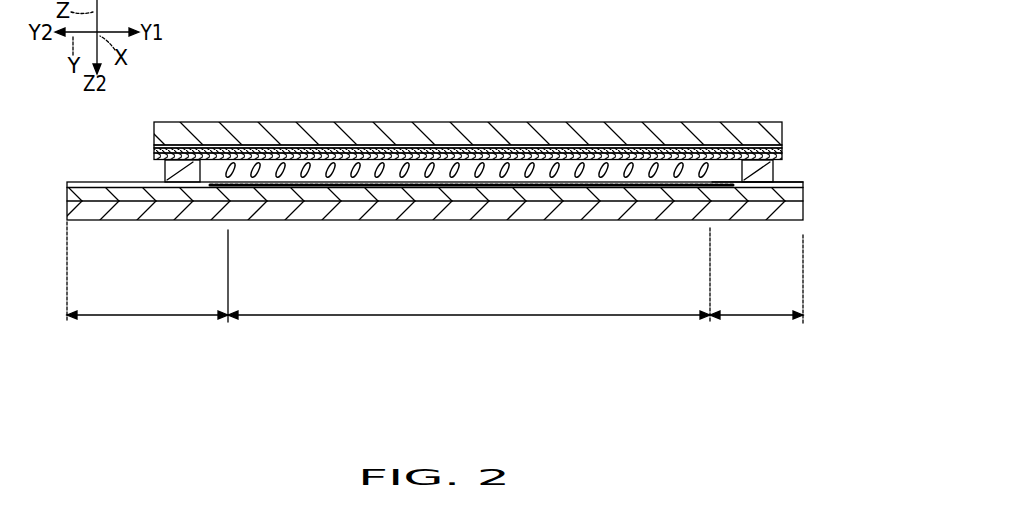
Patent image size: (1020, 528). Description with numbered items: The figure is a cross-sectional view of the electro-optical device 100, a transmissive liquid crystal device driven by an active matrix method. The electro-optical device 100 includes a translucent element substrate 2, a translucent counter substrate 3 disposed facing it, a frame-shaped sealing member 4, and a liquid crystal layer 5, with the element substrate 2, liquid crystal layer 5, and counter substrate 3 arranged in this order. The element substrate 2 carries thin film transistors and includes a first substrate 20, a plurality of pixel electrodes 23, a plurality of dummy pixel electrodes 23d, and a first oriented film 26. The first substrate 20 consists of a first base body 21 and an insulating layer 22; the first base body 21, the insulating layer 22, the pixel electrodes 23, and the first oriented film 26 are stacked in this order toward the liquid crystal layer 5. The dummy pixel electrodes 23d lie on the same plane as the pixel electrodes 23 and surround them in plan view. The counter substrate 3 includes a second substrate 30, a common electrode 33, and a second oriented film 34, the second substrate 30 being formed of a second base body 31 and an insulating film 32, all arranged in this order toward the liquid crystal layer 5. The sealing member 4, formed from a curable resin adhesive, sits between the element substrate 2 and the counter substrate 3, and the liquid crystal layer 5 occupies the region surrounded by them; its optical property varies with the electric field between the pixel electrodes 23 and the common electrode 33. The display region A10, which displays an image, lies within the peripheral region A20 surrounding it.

The electro-optical device 100 is at (792, 73).
The element substrate 2 is at (806, 230).
The counter substrate 3 is at (746, 118).
The second substrate 30 is at (203, 72).
The second base body 31 is at (224, 130).
The insulating film 32 is at (262, 146).
The common electrode 33 is at (343, 151).
The second oriented film 34 is at (383, 157).
The sealing member 4 is at (762, 163).
The liquid crystal layer 5 is at (722, 176).
The first substrate 20 is at (258, 277).
The first base body 21 is at (327, 205).
The insulating layer 22 is at (285, 188).
The pixel electrode 23 is at (386, 182).
The dummy pixel electrode 23d is at (235, 188).
The first oriented film 26 is at (743, 183).
The display region A10 is at (469, 285).
The peripheral region A20 is at (183, 315).